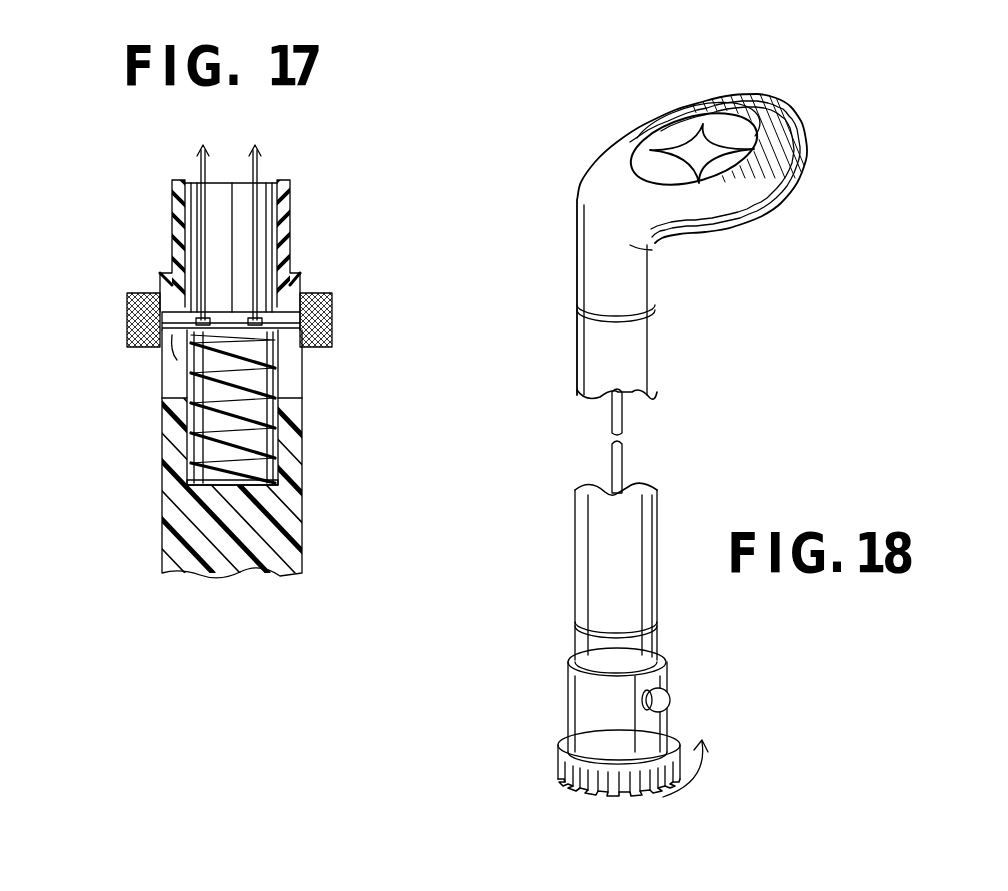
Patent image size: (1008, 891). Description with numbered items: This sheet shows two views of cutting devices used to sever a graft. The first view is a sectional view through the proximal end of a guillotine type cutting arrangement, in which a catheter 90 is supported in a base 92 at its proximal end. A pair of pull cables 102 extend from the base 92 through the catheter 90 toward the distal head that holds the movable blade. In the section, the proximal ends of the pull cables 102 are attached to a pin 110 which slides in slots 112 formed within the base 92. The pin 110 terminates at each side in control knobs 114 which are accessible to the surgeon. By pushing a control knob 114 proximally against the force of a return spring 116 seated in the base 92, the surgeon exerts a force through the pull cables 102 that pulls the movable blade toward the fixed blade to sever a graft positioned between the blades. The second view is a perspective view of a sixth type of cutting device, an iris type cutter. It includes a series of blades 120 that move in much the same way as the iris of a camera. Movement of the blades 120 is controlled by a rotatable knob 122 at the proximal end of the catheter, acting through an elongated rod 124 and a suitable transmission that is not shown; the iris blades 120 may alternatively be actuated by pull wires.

In FIG. 17, the catheter 90 is at (286, 241).
In FIG. 17, the base 92 is at (285, 549).
In FIG. 17, the pull cables 102 is at (172, 190).
In FIG. 17, the pin 110 is at (160, 364).
In FIG. 17, the slots 112 is at (172, 388).
In FIG. 17, the control knobs 114 is at (128, 335).
In FIG. 17, the return spring 116 is at (166, 481).
In FIG. 18, the blades 120 is at (688, 135).
In FIG. 18, the rotatable knob 122 is at (560, 748).
In FIG. 18, the elongated rod 124 is at (624, 462).